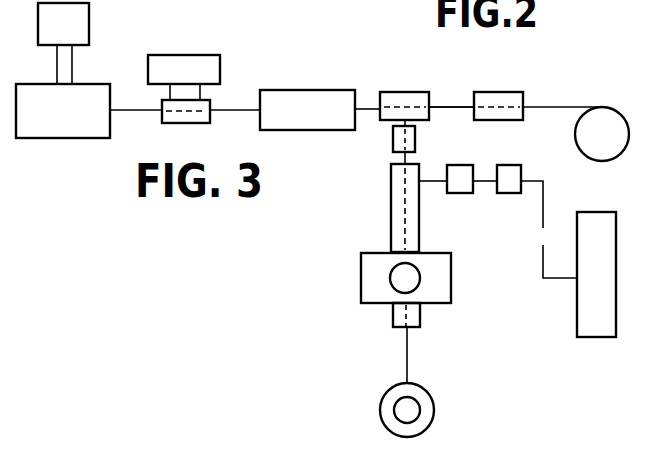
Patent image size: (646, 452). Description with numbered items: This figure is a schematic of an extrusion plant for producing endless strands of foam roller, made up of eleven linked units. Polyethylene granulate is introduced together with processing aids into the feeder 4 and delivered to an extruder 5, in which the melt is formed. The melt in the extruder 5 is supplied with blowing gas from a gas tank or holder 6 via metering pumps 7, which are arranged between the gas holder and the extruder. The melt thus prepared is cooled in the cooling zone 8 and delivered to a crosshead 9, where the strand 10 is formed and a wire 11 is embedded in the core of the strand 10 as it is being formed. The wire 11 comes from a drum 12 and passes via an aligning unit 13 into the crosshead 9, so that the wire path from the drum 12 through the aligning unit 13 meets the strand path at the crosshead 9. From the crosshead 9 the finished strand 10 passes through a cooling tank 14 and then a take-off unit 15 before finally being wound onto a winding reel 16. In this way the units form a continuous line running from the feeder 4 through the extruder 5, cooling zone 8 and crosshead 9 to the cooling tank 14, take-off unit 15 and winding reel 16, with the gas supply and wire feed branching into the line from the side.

The feeder 4 is at (388, 403).
The extruder 5 is at (362, 272).
The gas tank or holder 6 is at (585, 310).
The metering pumps 7 is at (456, 185).
The cooling zone 8 is at (393, 140).
The crosshead 9 is at (407, 96).
The strand 10 is at (370, 100).
The wire 11 is at (450, 105).
The drum 12 is at (604, 122).
The aligning unit 13 is at (494, 98).
The cooling tank 14 is at (303, 98).
The take-off unit 15 is at (170, 60).
The winding reel 16 is at (84, 18).